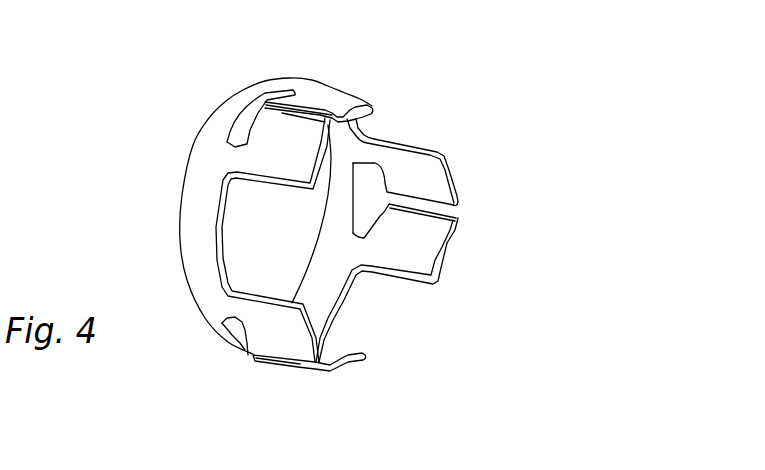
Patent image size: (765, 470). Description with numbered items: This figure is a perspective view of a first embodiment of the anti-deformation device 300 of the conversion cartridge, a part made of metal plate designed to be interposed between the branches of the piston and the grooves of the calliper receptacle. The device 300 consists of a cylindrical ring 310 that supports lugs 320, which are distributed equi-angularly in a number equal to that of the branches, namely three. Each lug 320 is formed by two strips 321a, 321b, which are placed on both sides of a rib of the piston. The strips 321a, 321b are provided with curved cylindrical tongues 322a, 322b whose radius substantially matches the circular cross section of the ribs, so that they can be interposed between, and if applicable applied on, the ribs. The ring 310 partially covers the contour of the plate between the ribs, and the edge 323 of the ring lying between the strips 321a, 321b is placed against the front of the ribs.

The anti-deformation device 300 is at (482, 75).
The ring 310 is at (203, 216).
The lugs 320 is at (329, 99).
The strip 321a is at (452, 166).
The strip 321b is at (373, 105).
The curved cylindrical tongue 322a is at (459, 194).
The curved cylindrical tongue 322b is at (459, 220).
The edge of the ring 323 is at (203, 280).